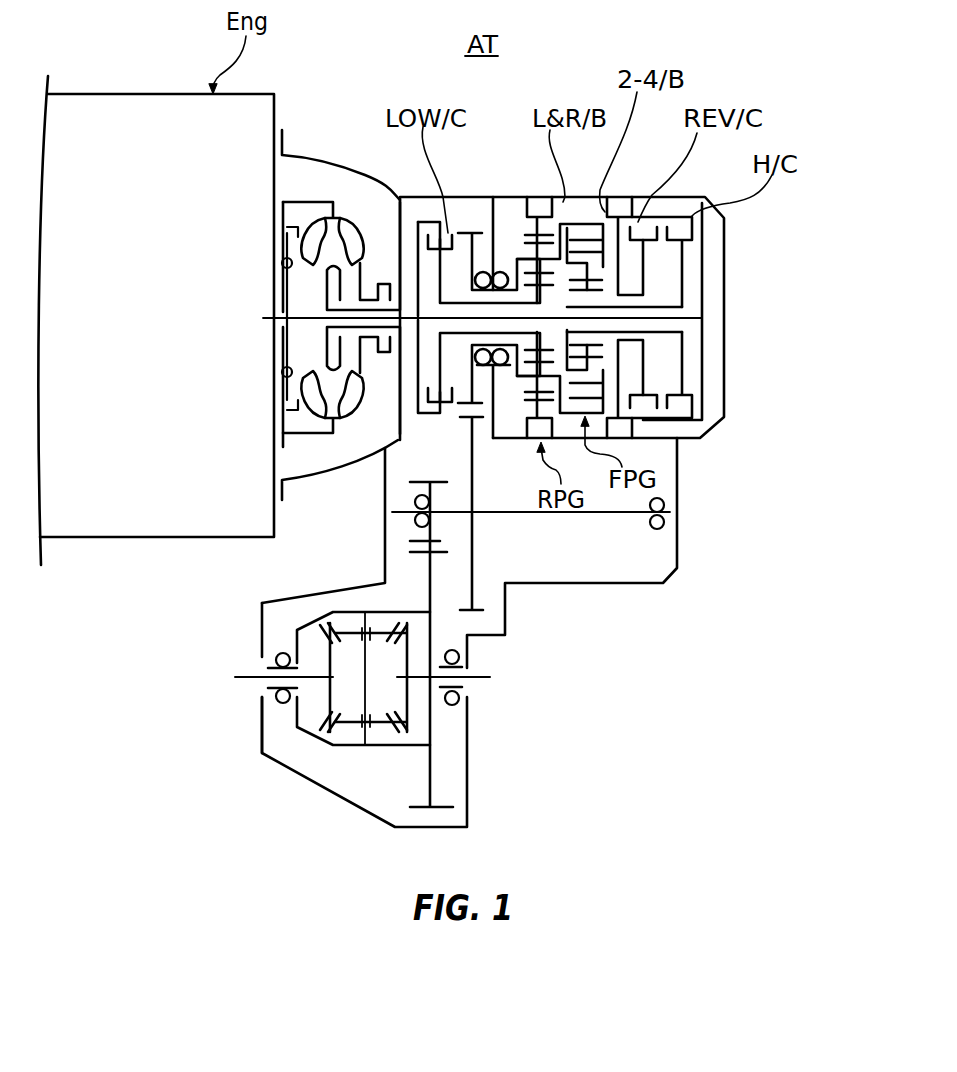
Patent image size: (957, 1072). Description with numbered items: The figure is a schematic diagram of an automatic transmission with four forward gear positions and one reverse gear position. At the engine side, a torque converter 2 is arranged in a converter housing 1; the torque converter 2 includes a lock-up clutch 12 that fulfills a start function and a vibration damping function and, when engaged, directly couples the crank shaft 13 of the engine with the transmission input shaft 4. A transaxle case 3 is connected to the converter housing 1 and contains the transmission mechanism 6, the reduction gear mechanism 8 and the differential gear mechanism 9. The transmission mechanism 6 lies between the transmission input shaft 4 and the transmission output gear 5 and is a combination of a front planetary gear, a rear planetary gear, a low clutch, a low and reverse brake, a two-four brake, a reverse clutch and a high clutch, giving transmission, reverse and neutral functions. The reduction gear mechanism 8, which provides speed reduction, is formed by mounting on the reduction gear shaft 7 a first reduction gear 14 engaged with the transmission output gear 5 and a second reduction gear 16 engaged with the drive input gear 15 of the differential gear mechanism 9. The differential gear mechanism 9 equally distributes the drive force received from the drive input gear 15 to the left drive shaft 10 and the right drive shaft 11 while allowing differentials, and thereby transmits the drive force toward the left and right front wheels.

The converter housing 1 is at (351, 165).
The torque converter 2 is at (318, 227).
The transaxle case 3 is at (725, 348).
The transmission input shaft 4 is at (687, 316).
The transmission output gear 5 is at (453, 417).
The transmission mechanism 6 is at (507, 232).
The reduction gear shaft 7 is at (596, 513).
The reduction gear mechanism 8 is at (482, 567).
The differential gear mechanism 9 is at (350, 748).
The left drive shaft 10 is at (250, 677).
The right drive shaft 11 is at (485, 672).
The lock-up clutch 12 is at (284, 217).
The crank shaft 13 is at (264, 316).
The first reduction gear 14 is at (476, 488).
The drive input gear 15 is at (445, 552).
The second reduction gear 16 is at (443, 482).